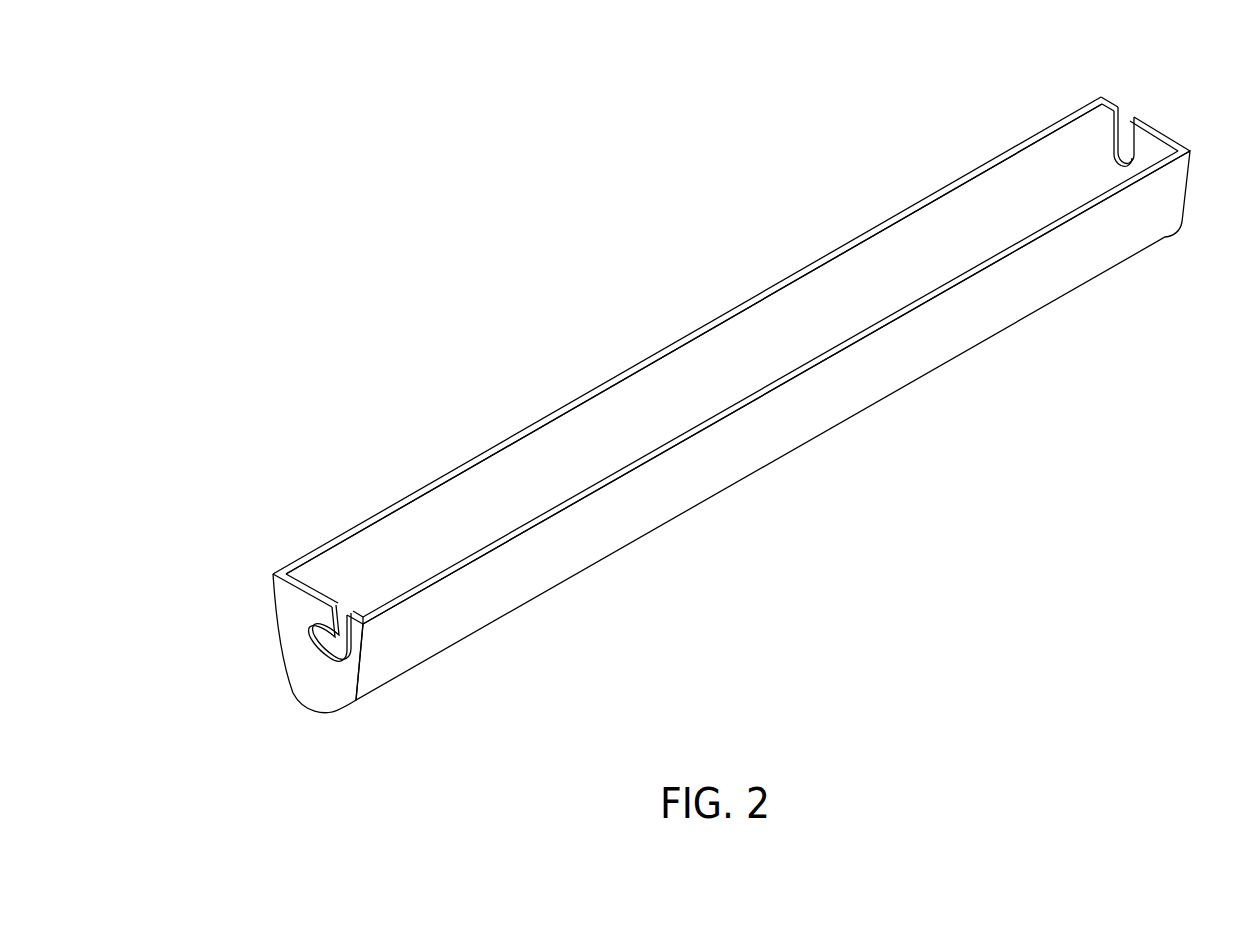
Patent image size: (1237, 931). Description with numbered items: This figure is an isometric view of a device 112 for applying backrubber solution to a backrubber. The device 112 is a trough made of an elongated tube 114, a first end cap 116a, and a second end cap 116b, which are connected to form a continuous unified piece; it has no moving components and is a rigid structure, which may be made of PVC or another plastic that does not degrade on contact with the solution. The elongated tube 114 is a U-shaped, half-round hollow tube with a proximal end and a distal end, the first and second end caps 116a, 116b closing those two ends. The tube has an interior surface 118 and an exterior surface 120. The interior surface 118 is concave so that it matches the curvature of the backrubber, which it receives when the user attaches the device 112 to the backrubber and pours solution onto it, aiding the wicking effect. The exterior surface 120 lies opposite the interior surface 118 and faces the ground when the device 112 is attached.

The device 112 is at (701, 398).
The elongated tube 114 is at (707, 327).
The first end cap 116a is at (307, 673).
The second end cap 116b is at (1150, 147).
The interior surface 118 is at (948, 268).
The exterior surface 120 is at (793, 420).